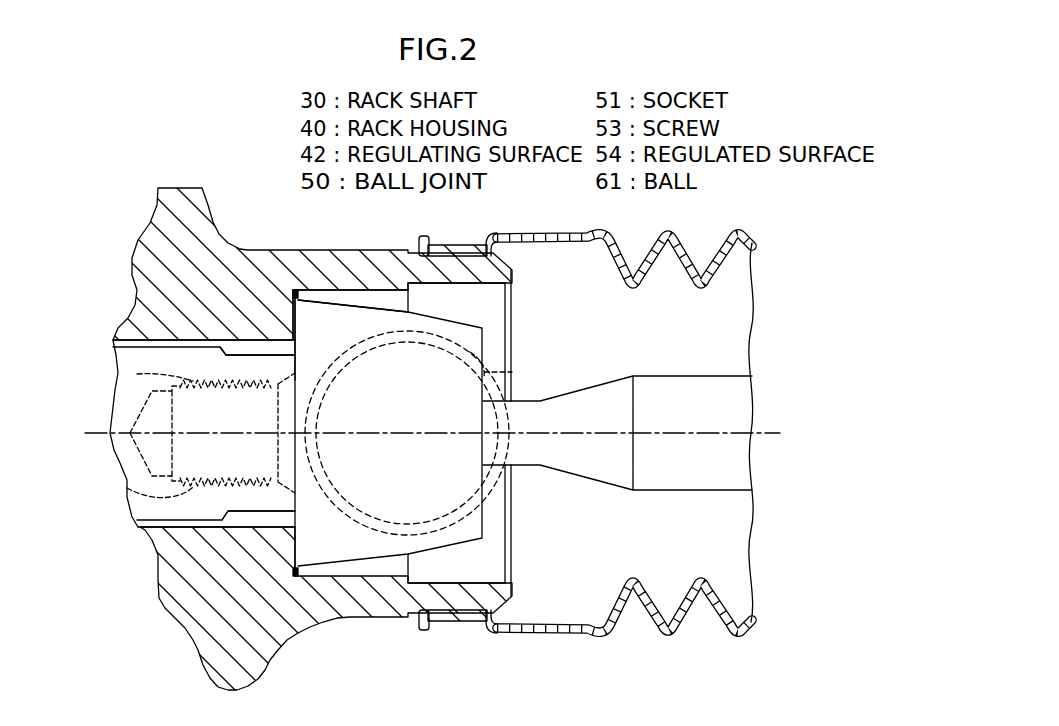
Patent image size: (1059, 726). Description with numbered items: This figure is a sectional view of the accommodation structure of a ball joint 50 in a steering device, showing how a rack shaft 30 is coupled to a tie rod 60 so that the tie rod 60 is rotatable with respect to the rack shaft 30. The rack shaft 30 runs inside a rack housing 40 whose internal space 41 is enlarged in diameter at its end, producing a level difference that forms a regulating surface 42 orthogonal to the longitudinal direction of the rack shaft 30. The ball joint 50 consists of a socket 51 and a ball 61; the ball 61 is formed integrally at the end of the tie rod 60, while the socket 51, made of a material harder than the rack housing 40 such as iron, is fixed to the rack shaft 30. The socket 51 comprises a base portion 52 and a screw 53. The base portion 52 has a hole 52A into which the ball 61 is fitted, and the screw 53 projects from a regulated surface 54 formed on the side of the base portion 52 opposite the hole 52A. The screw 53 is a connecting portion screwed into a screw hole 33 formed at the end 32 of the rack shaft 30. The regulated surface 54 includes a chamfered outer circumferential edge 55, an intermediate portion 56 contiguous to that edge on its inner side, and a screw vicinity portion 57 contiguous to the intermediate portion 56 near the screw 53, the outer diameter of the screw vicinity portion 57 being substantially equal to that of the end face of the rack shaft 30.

The rack shaft 30 is at (147, 528).
The end of rack shaft 32 is at (222, 520).
The screw hole 33 is at (137, 375).
The rack housing 40 is at (313, 249).
The internal space 41 is at (262, 518).
The regulating surface 42 is at (296, 291).
The ball joint 50 is at (337, 435).
The socket 51 is at (472, 317).
The base portion 52 is at (472, 335).
The hole 52A is at (495, 376).
The screw 53 is at (127, 488).
The regulated surface 54 is at (295, 545).
The outer circumferential edge 55 is at (337, 292).
The intermediate portion 56 is at (289, 316).
The screw vicinity portion 57 is at (287, 362).
The tie rod 60 is at (693, 376).
The ball 61 is at (492, 506).